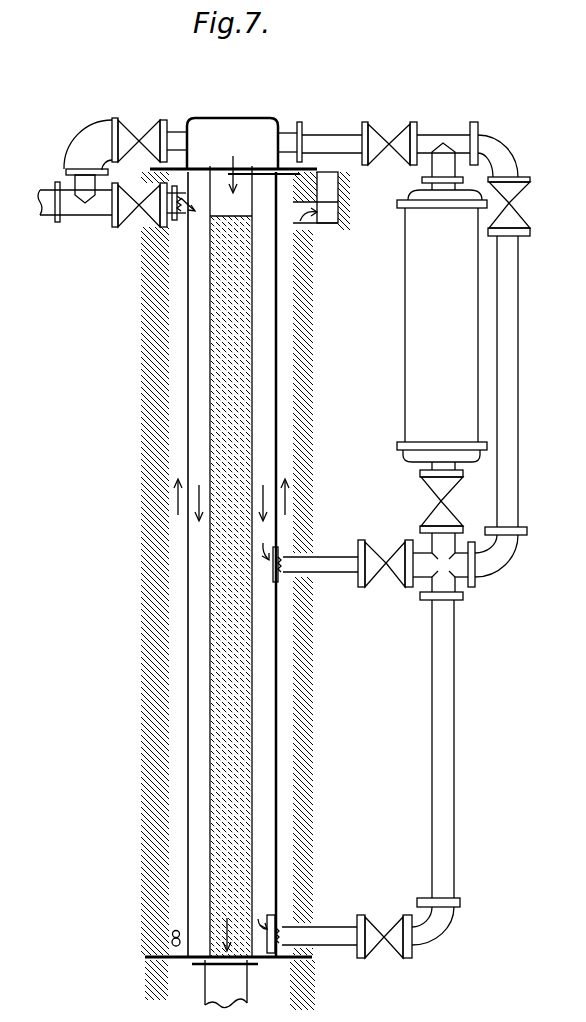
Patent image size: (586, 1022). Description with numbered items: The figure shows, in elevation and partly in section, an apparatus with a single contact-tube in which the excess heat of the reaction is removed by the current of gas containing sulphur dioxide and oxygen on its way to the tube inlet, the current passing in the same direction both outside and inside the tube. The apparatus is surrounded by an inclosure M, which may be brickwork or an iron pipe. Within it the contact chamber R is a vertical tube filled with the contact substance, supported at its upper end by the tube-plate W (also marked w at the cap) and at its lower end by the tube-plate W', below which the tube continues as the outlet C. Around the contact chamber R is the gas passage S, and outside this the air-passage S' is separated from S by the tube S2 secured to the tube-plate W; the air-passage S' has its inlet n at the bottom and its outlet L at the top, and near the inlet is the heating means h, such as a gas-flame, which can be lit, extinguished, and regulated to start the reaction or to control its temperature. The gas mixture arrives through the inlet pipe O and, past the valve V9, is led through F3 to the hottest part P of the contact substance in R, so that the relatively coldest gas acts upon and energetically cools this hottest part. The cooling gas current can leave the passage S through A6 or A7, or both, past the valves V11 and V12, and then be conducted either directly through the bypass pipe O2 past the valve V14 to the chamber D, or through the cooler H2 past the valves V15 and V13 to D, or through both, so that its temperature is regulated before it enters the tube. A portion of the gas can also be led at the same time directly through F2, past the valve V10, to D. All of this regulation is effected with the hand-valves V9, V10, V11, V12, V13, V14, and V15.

The hand-valve V10 is at (139, 135).
The direct pipe F2 is at (88, 161).
The inlet pipe O is at (44, 190).
The hand-valve V9 is at (149, 208).
The chamber D is at (234, 143).
The tube-plate w is at (233, 161).
The tube-plate W is at (332, 134).
The feed pipe F3 is at (191, 195).
The outlet L is at (315, 197).
The hottest part of the contact substance P is at (229, 204).
The separating tube S2 is at (278, 278).
The air-passage S' is at (305, 327).
The gas passage S is at (231, 564).
The contact chamber R is at (231, 561).
The inclosure M is at (231, 563).
The hand-valve V13 is at (420, 141).
The hand-valve V14 is at (511, 185).
The cooler H2 is at (442, 306).
The bypass pipe O2 is at (501, 406).
The hand-valve V15 is at (445, 511).
The outlet pipe A7 is at (310, 559).
The hand-valve V12 is at (416, 564).
The hand-valve V11 is at (408, 779).
The outlet pipe A6 is at (307, 930).
The tube-plate W' is at (249, 975).
The heating means h is at (174, 925).
The contact-tube outlet C is at (226, 984).
The inlet n is at (230, 985).